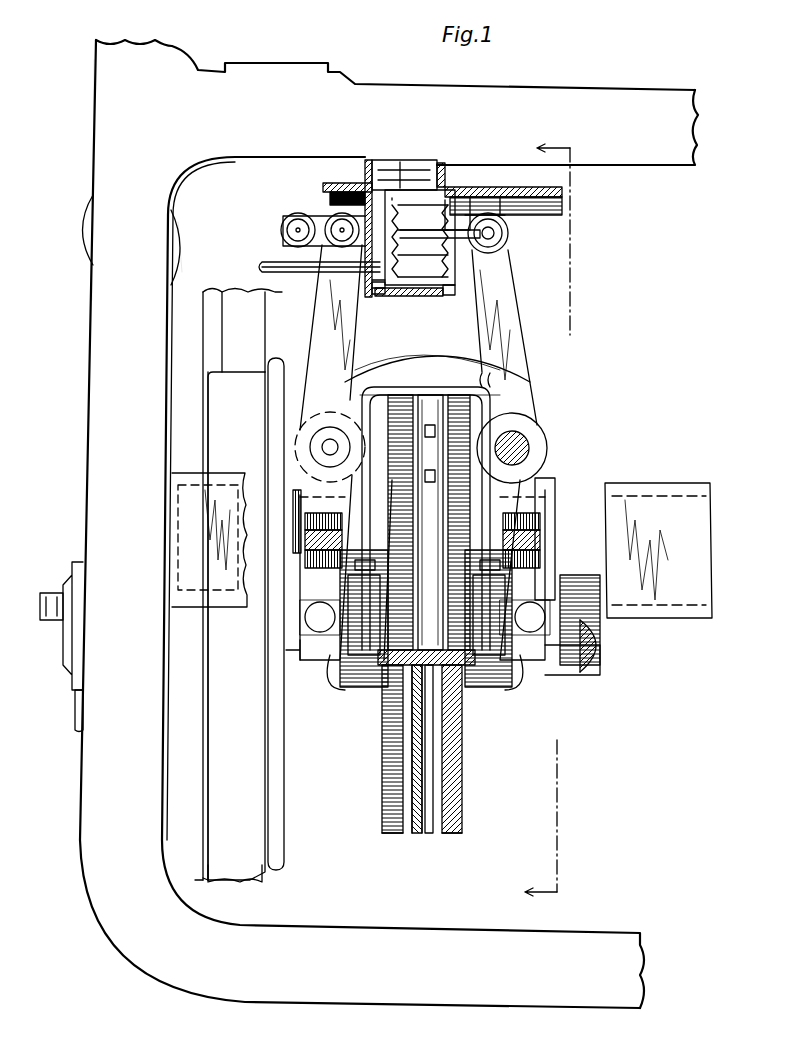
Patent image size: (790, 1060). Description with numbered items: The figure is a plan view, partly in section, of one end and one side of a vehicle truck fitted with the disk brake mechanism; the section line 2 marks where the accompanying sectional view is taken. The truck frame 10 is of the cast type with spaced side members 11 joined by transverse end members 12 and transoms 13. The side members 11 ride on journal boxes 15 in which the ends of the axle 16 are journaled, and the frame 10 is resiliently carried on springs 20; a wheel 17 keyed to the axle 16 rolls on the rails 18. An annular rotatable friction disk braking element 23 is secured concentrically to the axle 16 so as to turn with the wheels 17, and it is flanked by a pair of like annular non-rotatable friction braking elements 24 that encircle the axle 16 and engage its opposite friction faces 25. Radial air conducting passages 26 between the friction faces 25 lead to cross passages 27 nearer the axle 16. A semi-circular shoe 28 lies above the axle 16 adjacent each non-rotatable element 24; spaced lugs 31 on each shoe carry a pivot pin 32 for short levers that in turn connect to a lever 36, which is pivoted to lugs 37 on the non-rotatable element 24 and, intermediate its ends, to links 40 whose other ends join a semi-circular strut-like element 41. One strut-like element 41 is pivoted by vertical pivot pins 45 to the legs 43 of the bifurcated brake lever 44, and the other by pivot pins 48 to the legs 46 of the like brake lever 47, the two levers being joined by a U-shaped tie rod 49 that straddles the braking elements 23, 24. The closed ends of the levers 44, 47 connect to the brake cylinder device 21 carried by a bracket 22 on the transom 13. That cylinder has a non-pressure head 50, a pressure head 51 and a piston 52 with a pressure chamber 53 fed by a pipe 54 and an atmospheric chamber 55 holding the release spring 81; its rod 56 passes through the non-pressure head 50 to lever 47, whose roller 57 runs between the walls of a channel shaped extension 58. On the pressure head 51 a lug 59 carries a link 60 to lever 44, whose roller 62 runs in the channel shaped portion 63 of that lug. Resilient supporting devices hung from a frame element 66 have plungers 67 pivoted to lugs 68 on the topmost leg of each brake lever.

The section line 2— 2 is at (547, 519).
The truck frame 10 is at (97, 320).
The side members 11 is at (93, 180).
The end members 12 is at (384, 998).
The transom 13 is at (400, 97).
The journal boxes 15 is at (75, 702).
The axle 16 is at (600, 648).
The wheels 17 is at (267, 833).
The rails 18 is at (252, 885).
The springs 20 is at (190, 240).
The brake cylinder device 21 is at (441, 163).
The bracket 22 is at (405, 160).
The rotatable friction disk braking element 23 is at (417, 835).
The non-rotatable friction braking elements 24 is at (392, 835).
The friction faces 25 is at (465, 802).
The air conducting passages 26 is at (435, 440).
The cross passages 27 is at (430, 730).
The shoe 28 is at (352, 690).
The lugs 31 is at (350, 568).
The pivot pin 32 is at (424, 522).
The lever 36 is at (382, 690).
The lugs 37 is at (378, 682).
The links 40 is at (302, 612).
The strut-like element 41 is at (292, 498).
The legs 43 is at (300, 510).
The brake lever 44 is at (322, 336).
The pivot pins 45 is at (295, 648).
The legs 46 is at (535, 485).
The brake lever 47 is at (510, 322).
The pivot pins 48 is at (552, 668).
The tie rod 49 is at (430, 370).
The non-pressure head 50 is at (446, 275).
The pressure head 51 is at (369, 178).
The piston 52 is at (380, 294).
The pressure chamber 53 is at (368, 282).
The pipe 54 is at (258, 268).
The chamber 55 is at (405, 296).
The rod 56 is at (446, 200).
The roller 57 is at (505, 197).
The channel shaped extension 58 is at (480, 187).
The lug 59 is at (312, 218).
The link 60 is at (300, 250).
The roller 62 is at (333, 183).
The channel shaped portion 63 is at (356, 183).
The element 66 is at (180, 472).
The plunger 67 is at (340, 520).
The lugs 68 is at (303, 545).
The release spring 81 is at (432, 296).